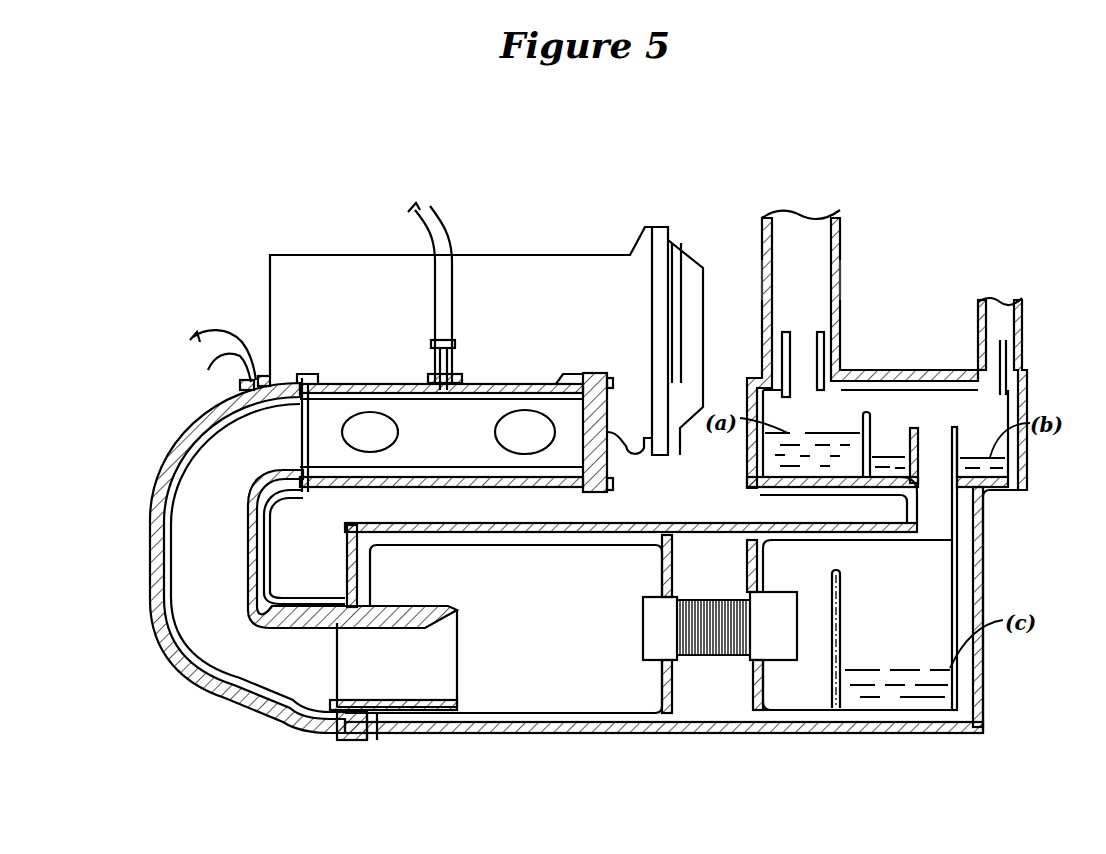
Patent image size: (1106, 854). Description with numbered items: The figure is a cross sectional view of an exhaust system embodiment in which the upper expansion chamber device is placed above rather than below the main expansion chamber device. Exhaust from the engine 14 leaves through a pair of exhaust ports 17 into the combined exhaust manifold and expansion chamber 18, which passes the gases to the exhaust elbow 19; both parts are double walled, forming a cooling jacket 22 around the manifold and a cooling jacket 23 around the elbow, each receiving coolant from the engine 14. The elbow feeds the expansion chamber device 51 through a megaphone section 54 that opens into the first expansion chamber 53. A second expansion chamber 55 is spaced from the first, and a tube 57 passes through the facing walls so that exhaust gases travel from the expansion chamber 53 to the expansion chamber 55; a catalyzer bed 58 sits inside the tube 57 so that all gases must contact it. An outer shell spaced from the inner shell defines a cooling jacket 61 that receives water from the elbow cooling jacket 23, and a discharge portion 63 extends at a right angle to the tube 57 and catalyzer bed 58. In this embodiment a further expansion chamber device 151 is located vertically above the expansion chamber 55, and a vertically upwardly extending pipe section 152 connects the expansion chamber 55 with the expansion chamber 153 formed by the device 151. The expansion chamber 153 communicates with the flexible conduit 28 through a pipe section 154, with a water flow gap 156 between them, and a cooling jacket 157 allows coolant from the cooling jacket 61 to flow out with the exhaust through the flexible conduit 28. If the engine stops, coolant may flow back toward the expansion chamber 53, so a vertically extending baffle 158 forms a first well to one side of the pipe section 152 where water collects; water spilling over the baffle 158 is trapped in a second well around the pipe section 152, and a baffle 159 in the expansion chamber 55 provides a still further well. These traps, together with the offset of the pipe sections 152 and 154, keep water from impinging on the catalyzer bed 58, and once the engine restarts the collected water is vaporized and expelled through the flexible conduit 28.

The engine 14 is at (542, 270).
The exhaust ports 17 is at (515, 422).
The combined exhaust manifold and expansion chamber 18 is at (485, 370).
The exhaust elbow 19 is at (147, 582).
The cooling jacket 22 is at (398, 385).
The cooling jacket 23 is at (178, 458).
The flexible conduit 28 is at (841, 246).
The expansion chamber device 51 is at (638, 738).
The first expansion chamber 53 is at (492, 591).
The megaphone section 54 is at (376, 704).
The second expansion chamber 55 is at (917, 598).
The tube 57 is at (662, 597).
The catalyzer bed 58 is at (668, 618).
The cooling jacket 61 is at (728, 705).
The discharge portion 63 is at (897, 516).
The expansion chamber device 151 is at (868, 362).
The pipe section 152 is at (962, 425).
The expansion chamber 153 is at (830, 426).
The pipe section 154 is at (782, 325).
The water flow gap 156 is at (842, 290).
The cooling jacket 157 is at (1019, 368).
The baffle 158 is at (870, 424).
The baffle 159 is at (843, 612).